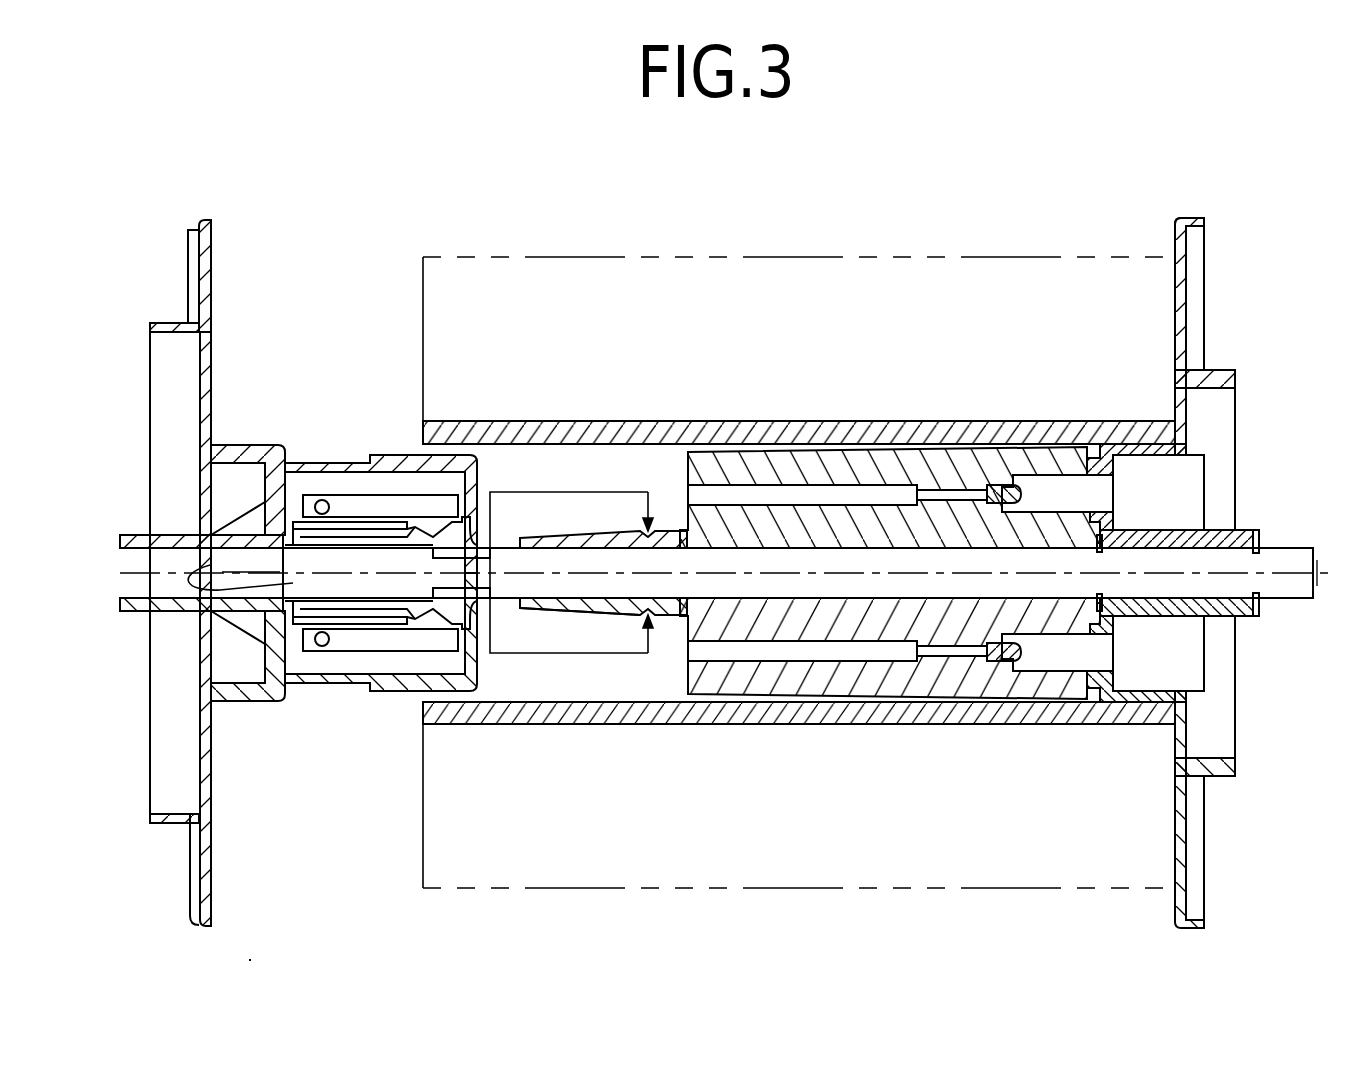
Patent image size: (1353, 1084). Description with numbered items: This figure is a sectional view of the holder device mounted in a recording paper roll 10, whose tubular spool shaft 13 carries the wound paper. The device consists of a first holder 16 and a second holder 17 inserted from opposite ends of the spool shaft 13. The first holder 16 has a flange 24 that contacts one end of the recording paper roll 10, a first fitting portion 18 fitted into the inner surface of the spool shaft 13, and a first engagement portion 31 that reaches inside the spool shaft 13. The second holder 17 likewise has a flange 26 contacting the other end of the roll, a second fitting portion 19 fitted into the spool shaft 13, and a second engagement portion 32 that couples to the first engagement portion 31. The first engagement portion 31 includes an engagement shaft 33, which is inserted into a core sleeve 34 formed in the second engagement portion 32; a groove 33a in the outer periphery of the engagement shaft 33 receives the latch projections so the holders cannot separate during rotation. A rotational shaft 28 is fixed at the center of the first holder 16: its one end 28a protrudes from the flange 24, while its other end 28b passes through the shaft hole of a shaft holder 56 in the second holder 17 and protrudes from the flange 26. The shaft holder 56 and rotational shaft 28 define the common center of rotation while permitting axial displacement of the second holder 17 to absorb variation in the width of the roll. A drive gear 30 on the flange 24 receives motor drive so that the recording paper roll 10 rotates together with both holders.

The recording paper roll 10 is at (800, 524).
The spool shaft 13 is at (799, 528).
The first holder 16 is at (1228, 551).
The second holder 17 is at (165, 550).
The first fitting portion 18 is at (1173, 517).
The second fitting portion 19 is at (248, 518).
The flange 24 is at (1165, 208).
The flange 26 is at (228, 262).
The rotational shaft 28 is at (725, 619).
The one end of the rotational shaft 28a is at (1294, 526).
The other end of the rotational shaft 28b is at (178, 577).
The drive gear 30 is at (1234, 529).
The first engagement portion 31 is at (890, 523).
The second engagement portion 32 is at (381, 520).
The engagement shaft 33 is at (601, 490).
The groove 33a is at (608, 704).
The core sleeve 34 is at (569, 550).
The shaft holder 56 is at (176, 538).